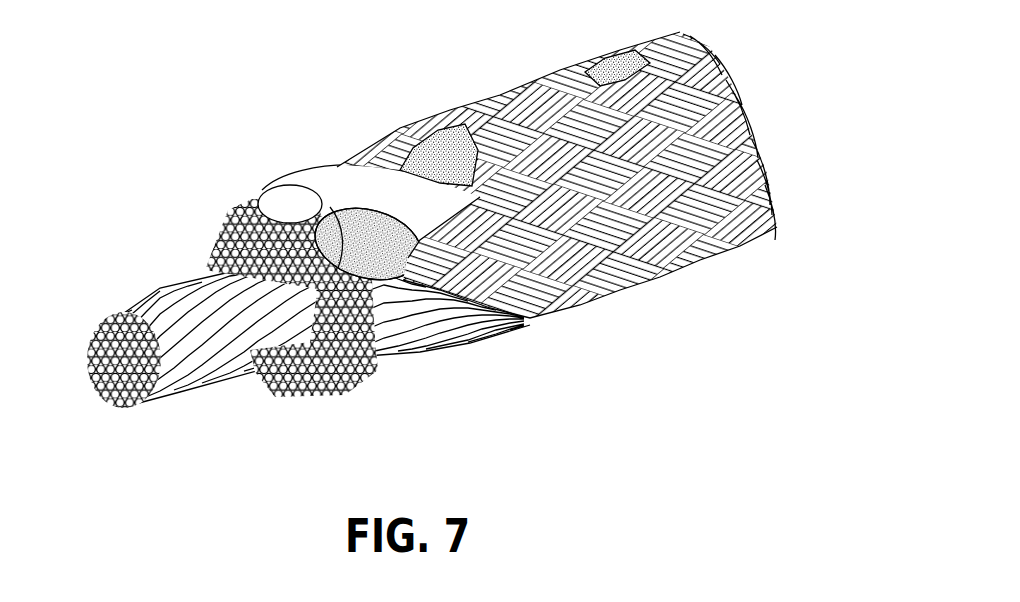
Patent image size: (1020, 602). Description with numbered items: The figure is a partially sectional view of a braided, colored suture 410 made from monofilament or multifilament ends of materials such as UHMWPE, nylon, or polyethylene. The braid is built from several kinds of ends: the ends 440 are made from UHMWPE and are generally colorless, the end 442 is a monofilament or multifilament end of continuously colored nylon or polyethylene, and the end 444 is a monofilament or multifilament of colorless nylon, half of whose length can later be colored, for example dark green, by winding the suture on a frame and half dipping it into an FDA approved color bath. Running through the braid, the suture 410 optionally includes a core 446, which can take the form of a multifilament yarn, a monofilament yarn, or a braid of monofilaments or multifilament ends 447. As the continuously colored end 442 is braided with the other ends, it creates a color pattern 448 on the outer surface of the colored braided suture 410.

The braided, colored suture 410 is at (158, 101).
The ends 440 is at (233, 222).
The end 442 is at (385, 276).
The end 444 is at (281, 160).
The core 446 is at (154, 275).
The monofilaments or multifilament ends 447 is at (106, 310).
The color pattern 448 is at (605, 83).